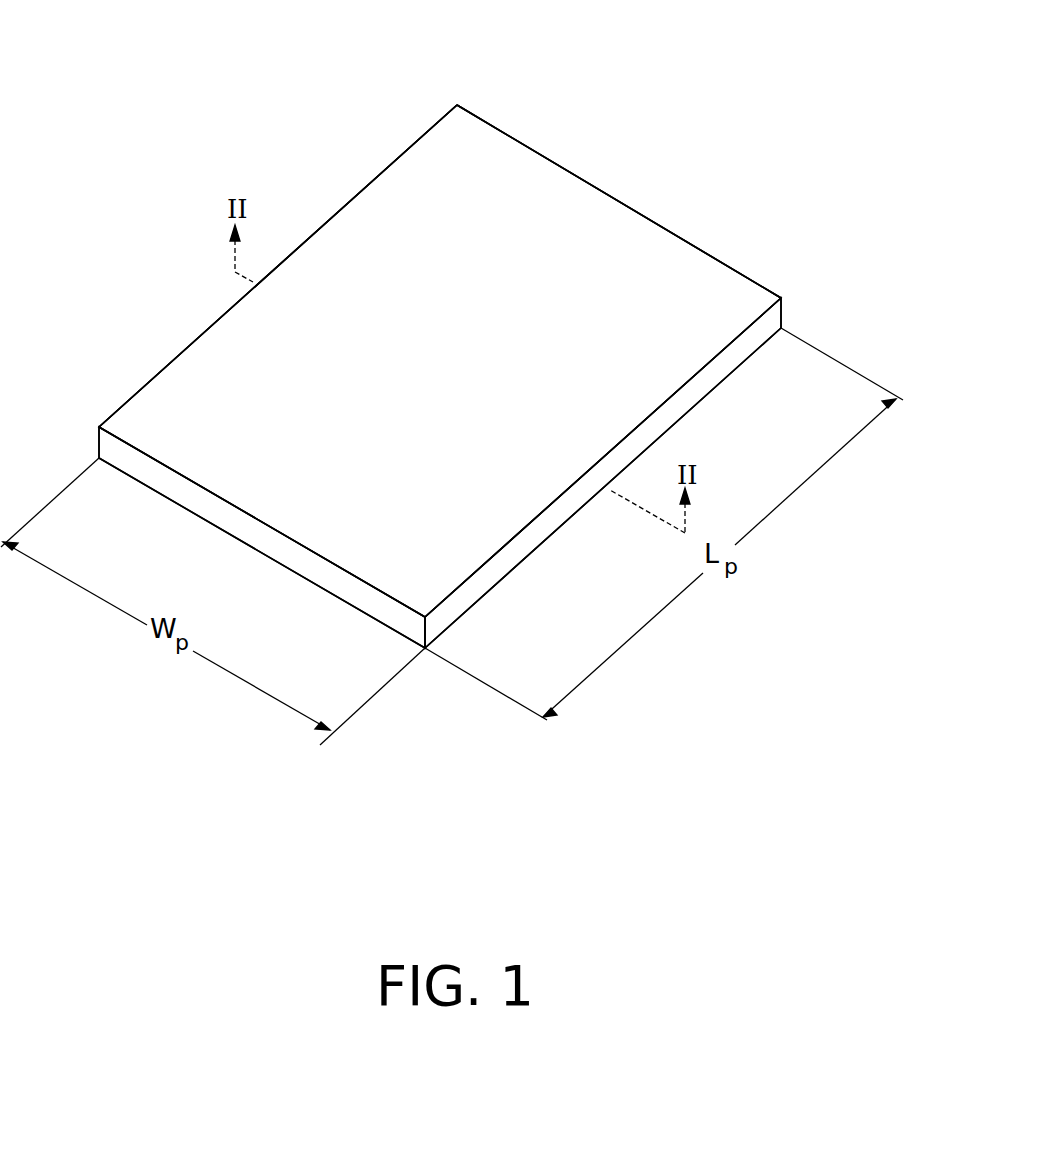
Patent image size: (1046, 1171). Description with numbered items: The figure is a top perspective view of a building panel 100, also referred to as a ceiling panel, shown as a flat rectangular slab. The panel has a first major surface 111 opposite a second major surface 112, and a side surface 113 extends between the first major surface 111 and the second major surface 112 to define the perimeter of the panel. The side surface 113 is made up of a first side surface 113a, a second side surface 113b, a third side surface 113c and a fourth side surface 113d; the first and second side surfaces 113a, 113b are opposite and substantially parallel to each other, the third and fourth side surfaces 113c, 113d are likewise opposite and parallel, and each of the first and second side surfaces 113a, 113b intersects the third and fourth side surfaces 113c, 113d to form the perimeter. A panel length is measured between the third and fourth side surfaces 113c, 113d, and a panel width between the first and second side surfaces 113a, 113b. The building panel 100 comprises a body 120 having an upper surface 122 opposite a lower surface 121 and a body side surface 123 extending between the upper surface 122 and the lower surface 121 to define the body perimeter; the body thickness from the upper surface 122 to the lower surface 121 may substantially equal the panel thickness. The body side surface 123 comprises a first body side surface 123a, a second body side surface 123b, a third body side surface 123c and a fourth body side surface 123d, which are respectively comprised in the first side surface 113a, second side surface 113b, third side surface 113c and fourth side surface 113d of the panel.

The building panel 100 is at (665, 88).
The first major surface 111 is at (460, 618).
The second major surface 112 is at (417, 167).
The side surface 113 is at (452, 393).
The first side surface 113a is at (693, 393).
The second side surface 113b is at (150, 375).
The third side surface 113c is at (710, 250).
The fourth side surface 113d is at (322, 580).
The body 120 is at (478, 140).
The lower surface 121 is at (440, 495).
The upper surface 122 is at (440, 328).
The body side surface 123 is at (438, 330).
The first body side surface 123a is at (530, 545).
The second body side surface 123b is at (318, 225).
The third body side surface 123c is at (565, 165).
The fourth body side surface 123d is at (160, 477).